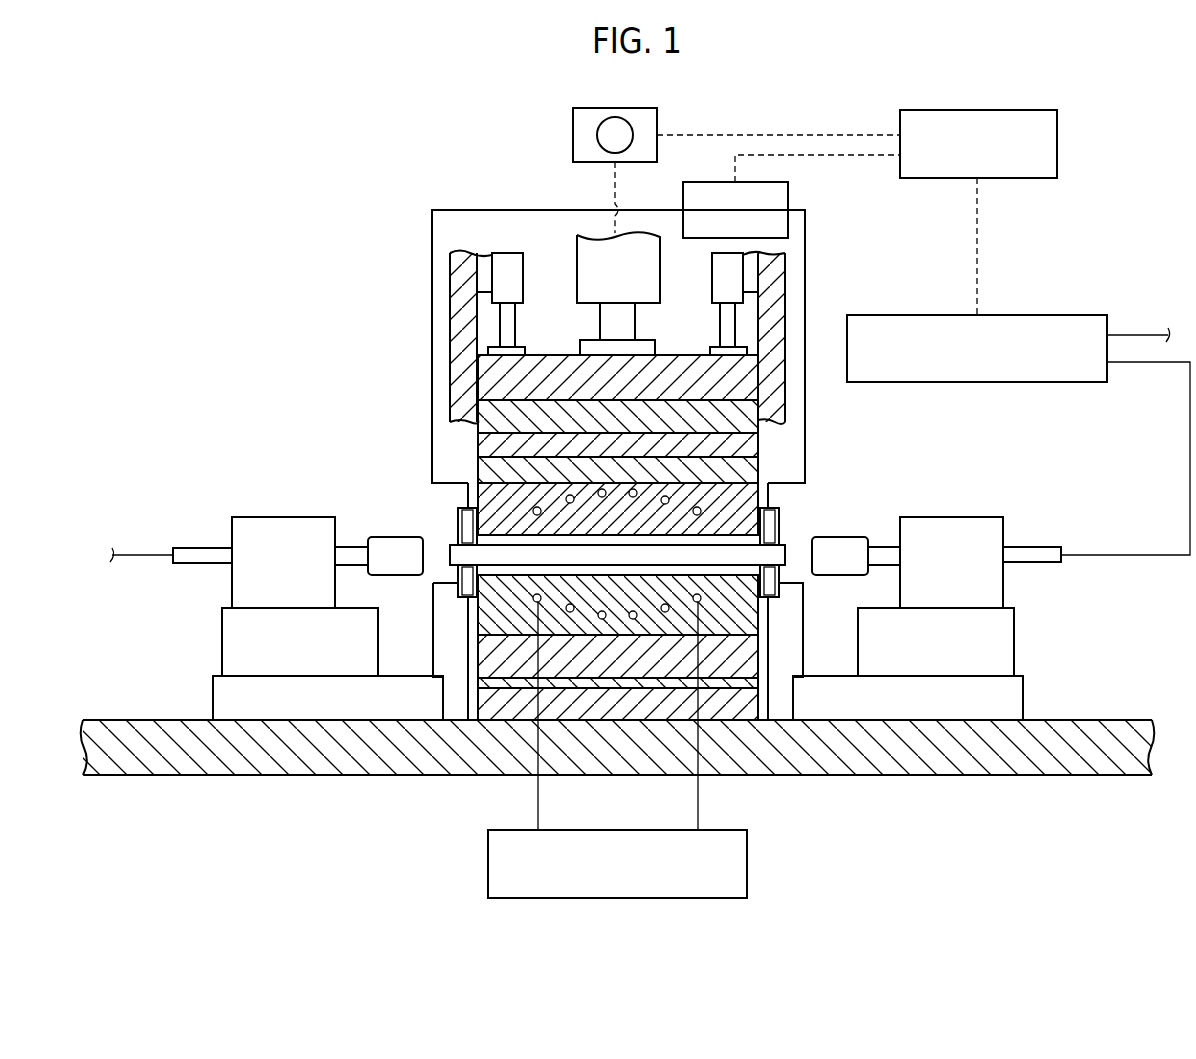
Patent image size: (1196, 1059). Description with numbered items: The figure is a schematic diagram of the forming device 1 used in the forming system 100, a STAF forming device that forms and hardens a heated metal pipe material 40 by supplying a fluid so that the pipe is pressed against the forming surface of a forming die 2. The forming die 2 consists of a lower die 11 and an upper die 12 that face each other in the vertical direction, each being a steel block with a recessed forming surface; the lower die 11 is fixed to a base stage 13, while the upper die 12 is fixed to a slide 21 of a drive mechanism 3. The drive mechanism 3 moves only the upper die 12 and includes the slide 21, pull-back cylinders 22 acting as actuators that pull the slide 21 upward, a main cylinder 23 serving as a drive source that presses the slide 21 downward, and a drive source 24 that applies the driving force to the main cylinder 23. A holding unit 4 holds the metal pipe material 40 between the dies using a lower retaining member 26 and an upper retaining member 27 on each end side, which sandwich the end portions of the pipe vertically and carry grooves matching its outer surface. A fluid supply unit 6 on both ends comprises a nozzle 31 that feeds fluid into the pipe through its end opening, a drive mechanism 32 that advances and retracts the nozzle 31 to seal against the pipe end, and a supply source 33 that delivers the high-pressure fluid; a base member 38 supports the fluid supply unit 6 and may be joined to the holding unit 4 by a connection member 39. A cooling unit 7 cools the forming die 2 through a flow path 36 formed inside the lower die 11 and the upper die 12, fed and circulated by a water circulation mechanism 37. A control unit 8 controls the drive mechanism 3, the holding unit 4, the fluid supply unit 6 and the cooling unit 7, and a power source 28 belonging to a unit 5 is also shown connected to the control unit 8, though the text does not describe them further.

The forming device 1 is at (145, 183).
The forming system 100 is at (635, 501).
The forming die 2 is at (680, 627).
The drive mechanism 3 is at (567, 188).
The holding unit 4 is at (617, 540).
The power supply unit 5 is at (791, 196).
The fluid supply unit 6 is at (203, 512).
The cooling unit 7 is at (571, 700).
The control unit 8 is at (1060, 144).
The lower die 11 is at (727, 620).
The upper die 12 is at (732, 500).
The base stage 13 is at (1098, 720).
The slide 21 is at (553, 357).
The pull-back cylinder 22 is at (505, 270).
The main cylinder 23 is at (593, 262).
The drive source 24 is at (573, 125).
The retaining member 26 is at (458, 572).
The retaining member 27 is at (458, 518).
The power source 28 is at (788, 193).
The nozzle 31 is at (408, 535).
The drive mechanism 32 is at (258, 517).
The supply source 33 is at (1060, 315).
The flow path 36 is at (571, 503).
The water circulation mechanism 37 is at (488, 855).
The base member 38 is at (362, 705).
The connection member 39 is at (455, 680).
The metal pipe material 40 is at (508, 553).